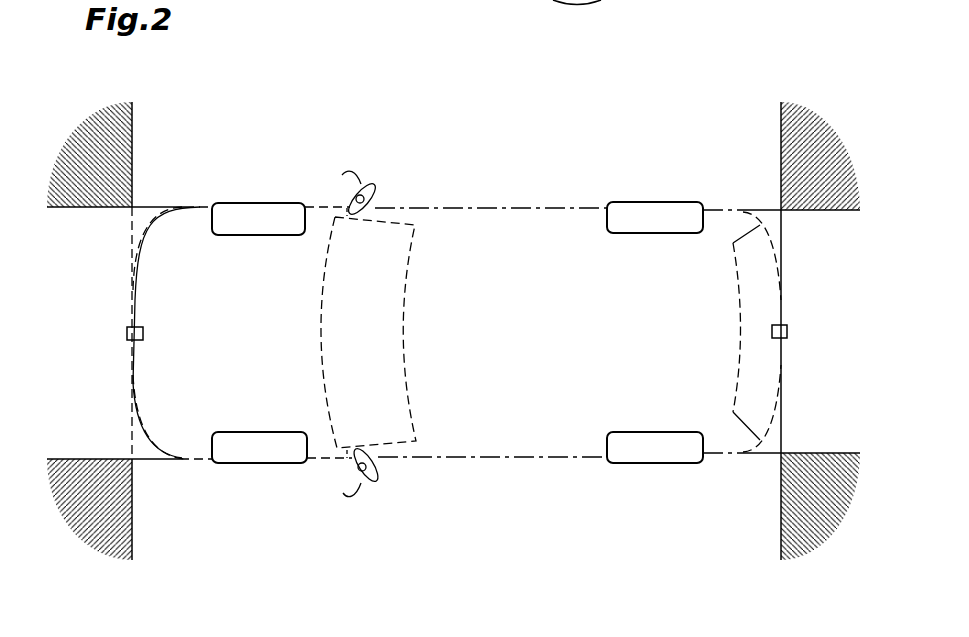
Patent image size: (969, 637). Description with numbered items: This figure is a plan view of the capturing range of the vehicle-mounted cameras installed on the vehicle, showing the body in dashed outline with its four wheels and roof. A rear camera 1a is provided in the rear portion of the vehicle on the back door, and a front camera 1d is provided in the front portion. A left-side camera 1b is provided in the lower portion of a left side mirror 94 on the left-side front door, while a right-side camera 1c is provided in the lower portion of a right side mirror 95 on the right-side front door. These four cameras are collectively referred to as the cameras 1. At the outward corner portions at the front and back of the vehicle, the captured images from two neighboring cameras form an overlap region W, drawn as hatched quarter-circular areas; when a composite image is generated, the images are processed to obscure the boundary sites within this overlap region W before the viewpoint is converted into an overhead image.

The cameras 1 is at (455, 336).
The rear camera 1a is at (787, 328).
The left-side camera 1b is at (373, 467).
The right-side camera 1c is at (368, 198).
The front camera 1d is at (127, 335).
The left side mirror 94 is at (342, 495).
The right side mirror 95 is at (342, 173).
The overlap region W is at (115, 160).